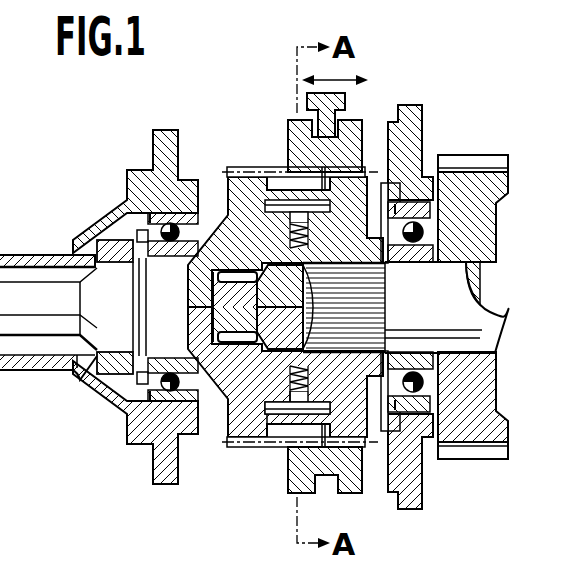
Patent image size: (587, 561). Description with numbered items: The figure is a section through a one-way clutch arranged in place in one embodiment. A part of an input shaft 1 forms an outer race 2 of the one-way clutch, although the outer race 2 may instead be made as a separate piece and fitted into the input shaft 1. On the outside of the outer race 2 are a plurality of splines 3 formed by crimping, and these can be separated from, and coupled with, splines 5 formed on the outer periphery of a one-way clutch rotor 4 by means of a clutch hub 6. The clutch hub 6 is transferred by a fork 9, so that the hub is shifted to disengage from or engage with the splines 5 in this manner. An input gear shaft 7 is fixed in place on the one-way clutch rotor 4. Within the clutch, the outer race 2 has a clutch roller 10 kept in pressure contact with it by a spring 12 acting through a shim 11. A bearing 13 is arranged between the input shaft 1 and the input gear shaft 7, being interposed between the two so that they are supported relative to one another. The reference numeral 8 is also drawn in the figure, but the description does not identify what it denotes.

The input shaft 1 is at (42, 295).
The outer race 2 is at (272, 183).
The splines 3 is at (302, 147).
The one-way clutch rotor 4 is at (365, 443).
The splines 5 is at (340, 447).
The clutch hub 6 is at (292, 480).
The input gear shaft 7 is at (508, 323).
The splines 8 is at (385, 315).
The fork 9 is at (345, 108).
The clutch roller 10 is at (283, 417).
The shim 11 is at (280, 420).
The spring 12 is at (308, 374).
The bearing 13 is at (250, 332).